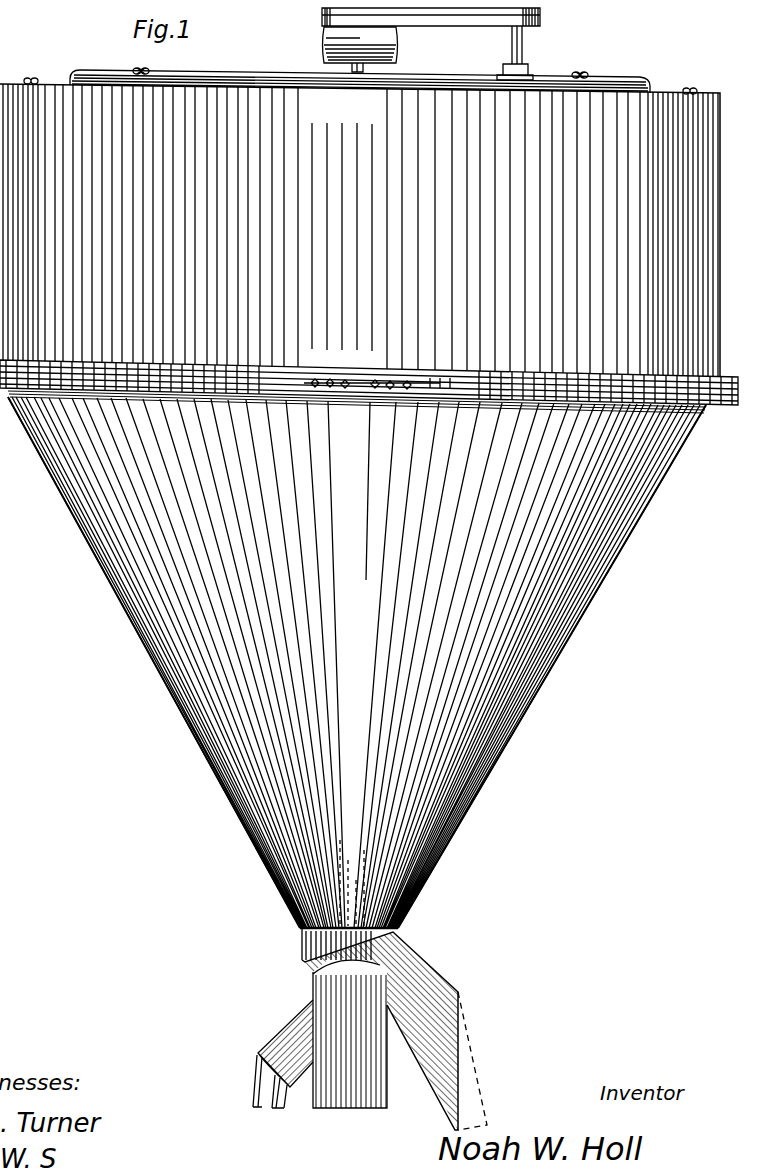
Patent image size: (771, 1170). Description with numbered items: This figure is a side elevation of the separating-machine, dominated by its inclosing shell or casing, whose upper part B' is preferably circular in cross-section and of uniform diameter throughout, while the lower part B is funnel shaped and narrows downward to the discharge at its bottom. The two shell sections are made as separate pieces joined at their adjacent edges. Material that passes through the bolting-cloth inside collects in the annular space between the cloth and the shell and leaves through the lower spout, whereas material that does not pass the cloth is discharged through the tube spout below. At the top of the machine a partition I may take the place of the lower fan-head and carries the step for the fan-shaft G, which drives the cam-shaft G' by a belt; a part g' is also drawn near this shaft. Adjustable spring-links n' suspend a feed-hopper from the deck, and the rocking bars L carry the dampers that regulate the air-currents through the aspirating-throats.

The upper part of inclosing shell B' is at (360, 230).
The lower funnel-shaped part of shell B is at (357, 662).
The partition I is at (360, 70).
The fan-shaft G is at (346, 49).
The bar g' is at (431, 31).
The cam-shaft G' is at (527, 53).
The adjustable spring-links n' is at (356, 60).
The rocking bars L is at (345, 390).